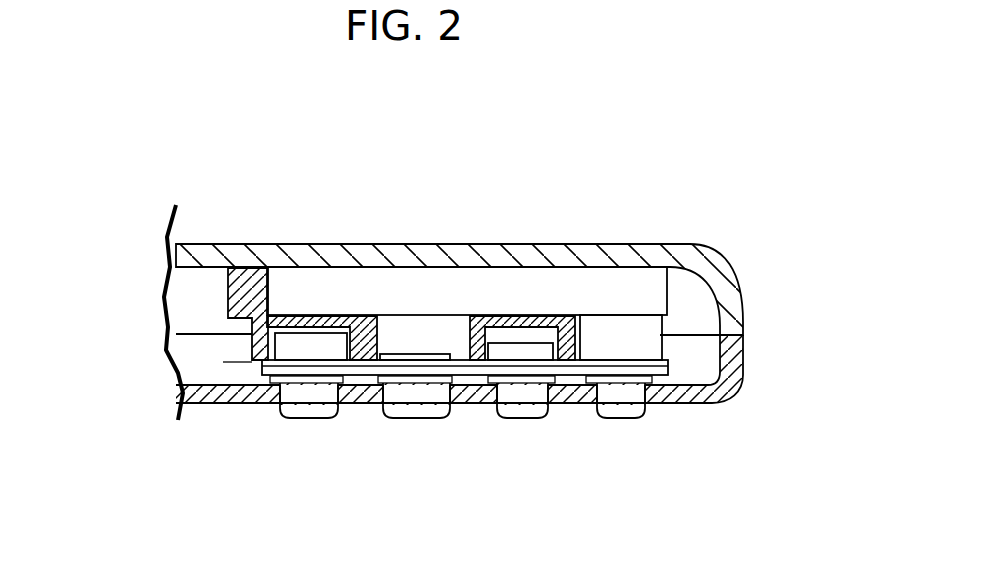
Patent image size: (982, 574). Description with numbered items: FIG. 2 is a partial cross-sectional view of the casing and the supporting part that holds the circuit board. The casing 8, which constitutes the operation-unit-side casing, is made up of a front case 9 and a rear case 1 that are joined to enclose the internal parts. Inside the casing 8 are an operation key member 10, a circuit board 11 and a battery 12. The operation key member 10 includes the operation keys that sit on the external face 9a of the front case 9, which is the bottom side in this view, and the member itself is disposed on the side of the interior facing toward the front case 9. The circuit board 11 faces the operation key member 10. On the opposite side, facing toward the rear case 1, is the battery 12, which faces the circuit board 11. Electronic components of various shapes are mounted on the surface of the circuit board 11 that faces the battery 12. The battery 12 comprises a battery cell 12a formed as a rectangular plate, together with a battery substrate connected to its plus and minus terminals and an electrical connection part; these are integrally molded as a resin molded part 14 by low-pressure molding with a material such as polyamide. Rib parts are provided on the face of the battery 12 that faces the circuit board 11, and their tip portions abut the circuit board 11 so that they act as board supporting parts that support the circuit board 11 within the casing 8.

The rear case 1 is at (683, 250).
The casing 8 is at (735, 232).
The front case 9 is at (253, 404).
The external face 9a is at (194, 404).
The operation key member 10 is at (668, 398).
The circuit board 11 is at (670, 362).
The battery 12 is at (206, 296).
The battery cell 12a is at (602, 282).
The resin molded part 14 is at (250, 269).